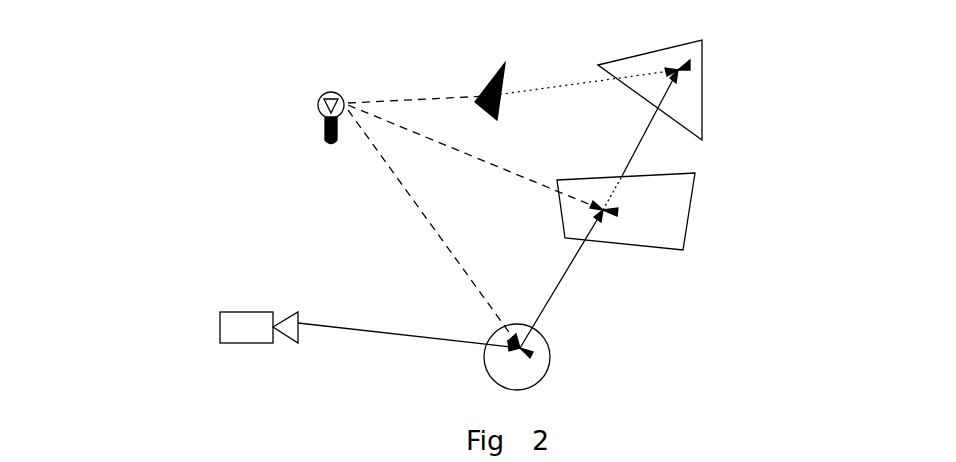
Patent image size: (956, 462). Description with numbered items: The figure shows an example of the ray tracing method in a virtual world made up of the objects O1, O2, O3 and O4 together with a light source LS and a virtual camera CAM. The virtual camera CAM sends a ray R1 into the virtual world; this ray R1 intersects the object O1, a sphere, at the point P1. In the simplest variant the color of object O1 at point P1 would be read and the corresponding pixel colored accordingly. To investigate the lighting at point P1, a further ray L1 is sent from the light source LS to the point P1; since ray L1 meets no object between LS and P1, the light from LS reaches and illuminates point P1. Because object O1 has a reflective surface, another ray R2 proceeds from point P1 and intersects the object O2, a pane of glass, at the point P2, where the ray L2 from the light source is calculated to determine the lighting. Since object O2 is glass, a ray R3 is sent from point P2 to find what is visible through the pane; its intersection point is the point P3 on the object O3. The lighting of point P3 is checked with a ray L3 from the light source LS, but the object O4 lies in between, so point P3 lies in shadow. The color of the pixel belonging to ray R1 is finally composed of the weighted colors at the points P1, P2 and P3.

The light source LS is at (331, 105).
The virtual camera CAM is at (259, 314).
The object (sphere) O1 is at (532, 358).
The object (pane of glass) O2 is at (641, 211).
The object O3 is at (668, 90).
The object O4 is at (483, 90).
The point P1 is at (533, 355).
The point P2 is at (617, 212).
The point P3 is at (687, 63).
The ray R1 is at (409, 346).
The ray R2 is at (561, 279).
The ray R3 is at (640, 140).
The ray L1 is at (434, 229).
The ray L2 is at (475, 157).
The ray L3 is at (513, 93).